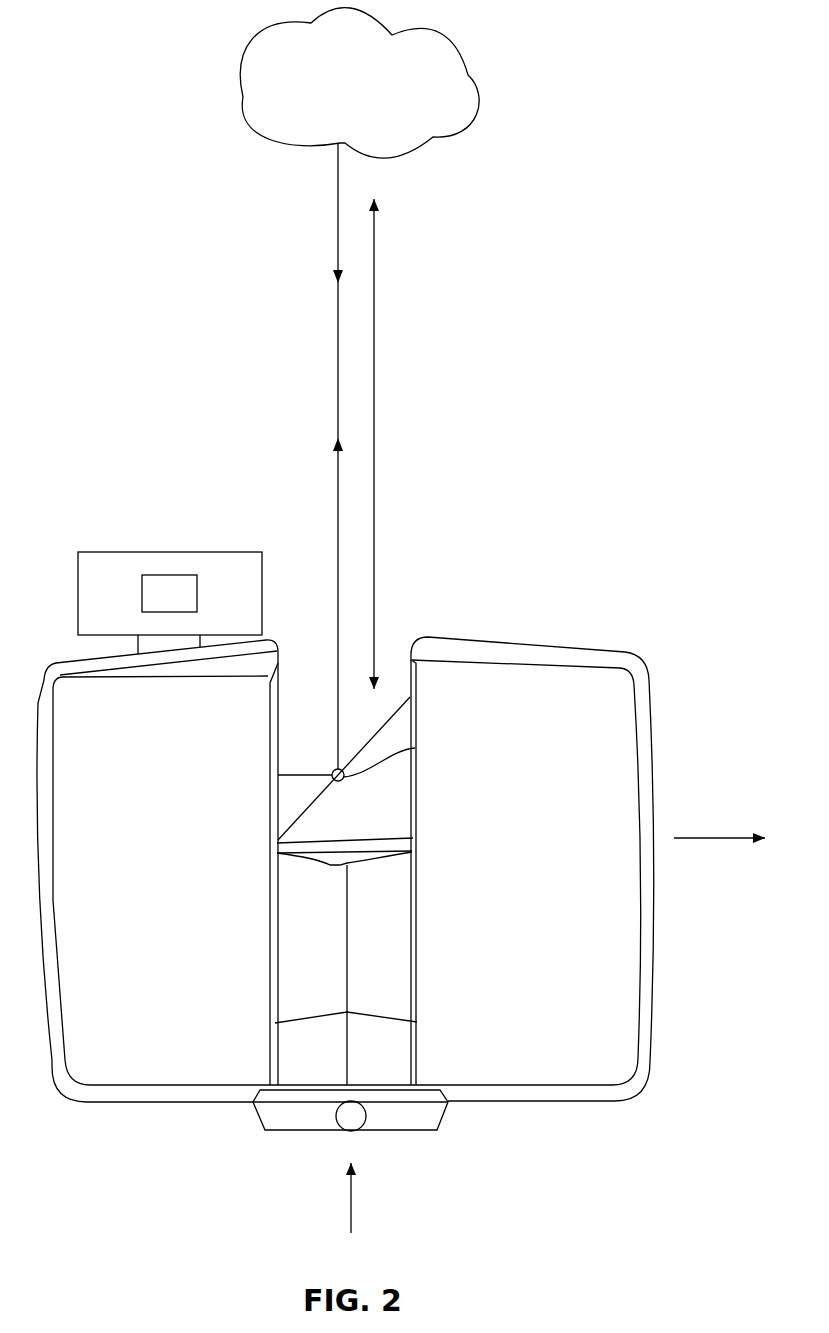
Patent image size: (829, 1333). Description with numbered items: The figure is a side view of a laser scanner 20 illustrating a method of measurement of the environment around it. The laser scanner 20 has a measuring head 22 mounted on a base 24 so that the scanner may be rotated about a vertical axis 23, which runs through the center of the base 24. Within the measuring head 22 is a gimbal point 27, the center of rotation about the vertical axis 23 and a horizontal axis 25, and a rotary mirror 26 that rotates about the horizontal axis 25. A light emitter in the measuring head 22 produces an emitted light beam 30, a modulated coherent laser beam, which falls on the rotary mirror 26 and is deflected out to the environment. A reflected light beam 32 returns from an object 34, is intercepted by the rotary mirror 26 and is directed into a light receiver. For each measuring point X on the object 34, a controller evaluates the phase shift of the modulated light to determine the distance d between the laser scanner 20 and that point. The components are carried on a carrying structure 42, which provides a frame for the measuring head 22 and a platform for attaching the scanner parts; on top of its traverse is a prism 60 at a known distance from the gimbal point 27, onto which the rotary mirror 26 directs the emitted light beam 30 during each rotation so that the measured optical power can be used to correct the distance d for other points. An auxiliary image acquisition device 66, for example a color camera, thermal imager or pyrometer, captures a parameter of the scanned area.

The laser scanner 20 is at (184, 249).
The measuring head 22 is at (552, 572).
The vertical axis 23 is at (352, 1195).
The base 24 is at (257, 1117).
The horizontal axis 25 is at (725, 837).
The rotary mirror 26 is at (313, 800).
The gimbal point 27 is at (415, 748).
The emitted light beam 30 is at (337, 474).
The reflected light beam 32 is at (337, 258).
The object 34 is at (428, 33).
The carrying structure 42 is at (438, 1155).
The prism 60 is at (355, 868).
The auxiliary image acquisition device 66 is at (98, 510).
The distance d is at (375, 447).